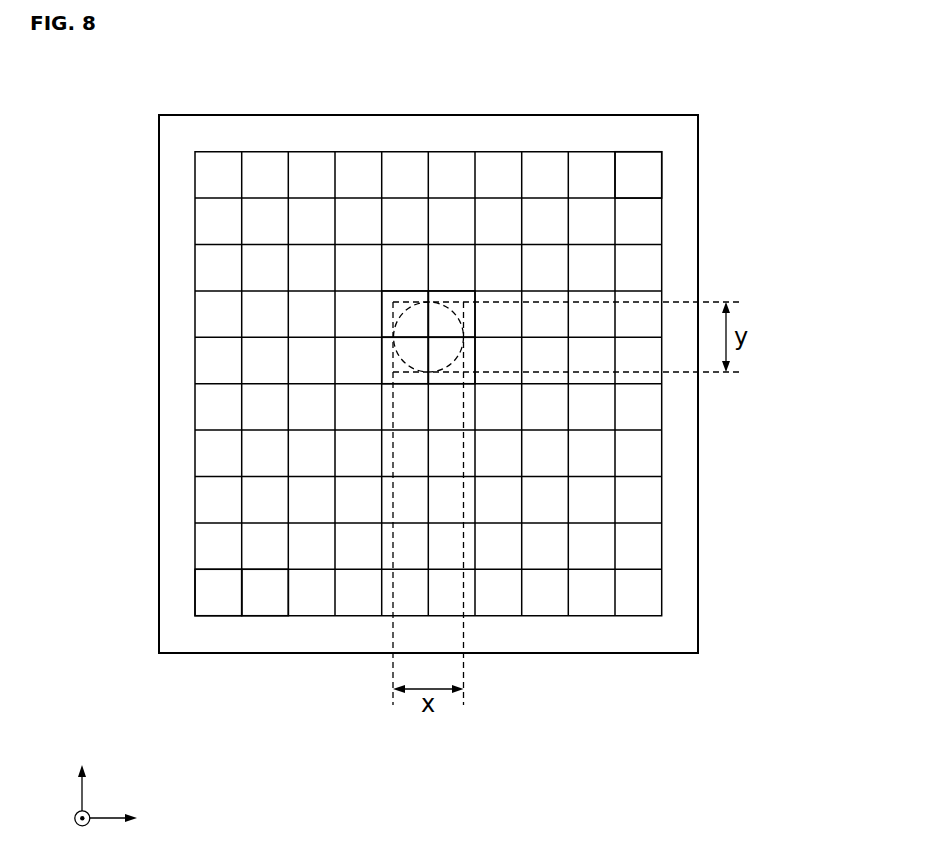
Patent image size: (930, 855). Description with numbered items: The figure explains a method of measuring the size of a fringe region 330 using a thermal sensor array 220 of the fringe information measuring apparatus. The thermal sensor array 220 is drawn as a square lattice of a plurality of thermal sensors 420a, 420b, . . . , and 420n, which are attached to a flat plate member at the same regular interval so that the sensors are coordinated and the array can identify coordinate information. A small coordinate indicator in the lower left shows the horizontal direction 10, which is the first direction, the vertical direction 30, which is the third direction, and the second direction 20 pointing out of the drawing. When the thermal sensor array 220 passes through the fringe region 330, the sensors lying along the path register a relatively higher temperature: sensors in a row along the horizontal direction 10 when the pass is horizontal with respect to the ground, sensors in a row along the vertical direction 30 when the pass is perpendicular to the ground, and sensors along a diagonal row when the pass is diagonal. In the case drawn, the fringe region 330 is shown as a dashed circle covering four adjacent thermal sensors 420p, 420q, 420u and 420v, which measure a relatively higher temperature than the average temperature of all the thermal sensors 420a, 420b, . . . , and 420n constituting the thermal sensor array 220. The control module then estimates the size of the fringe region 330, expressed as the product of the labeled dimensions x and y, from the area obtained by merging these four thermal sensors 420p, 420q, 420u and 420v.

The thermal sensor array 220 is at (731, 202).
The fringe region 330 is at (393, 330).
The thermal sensor 420a is at (217, 600).
The thermal sensor 420b is at (268, 600).
The thermal sensor 420n is at (640, 168).
The thermal sensor 420u is at (397, 293).
The thermal sensor 420v is at (460, 293).
The thermal sensor 420p is at (385, 378).
The thermal sensor 420q is at (468, 378).
The horizontal direction 10 is at (130, 819).
The second direction 20 is at (83, 833).
The vertical direction 30 is at (83, 773).